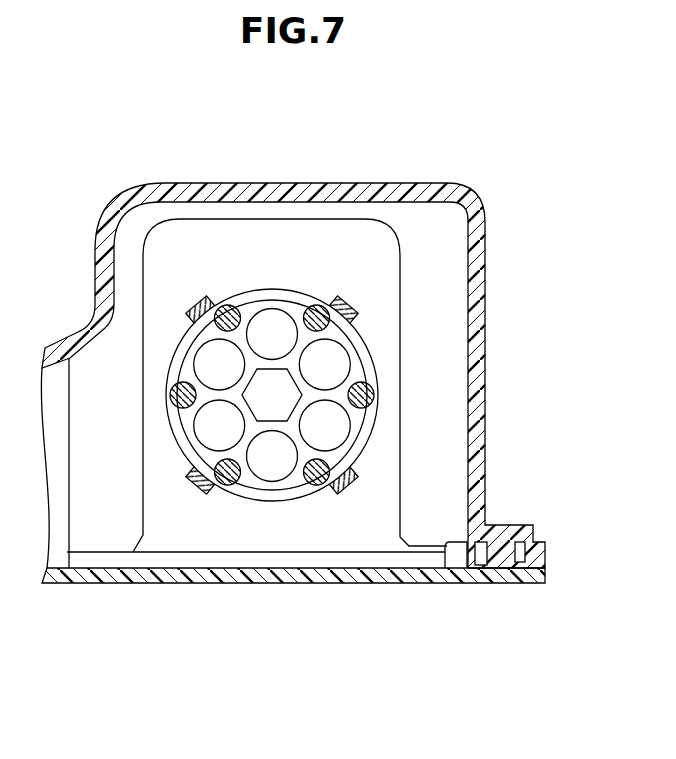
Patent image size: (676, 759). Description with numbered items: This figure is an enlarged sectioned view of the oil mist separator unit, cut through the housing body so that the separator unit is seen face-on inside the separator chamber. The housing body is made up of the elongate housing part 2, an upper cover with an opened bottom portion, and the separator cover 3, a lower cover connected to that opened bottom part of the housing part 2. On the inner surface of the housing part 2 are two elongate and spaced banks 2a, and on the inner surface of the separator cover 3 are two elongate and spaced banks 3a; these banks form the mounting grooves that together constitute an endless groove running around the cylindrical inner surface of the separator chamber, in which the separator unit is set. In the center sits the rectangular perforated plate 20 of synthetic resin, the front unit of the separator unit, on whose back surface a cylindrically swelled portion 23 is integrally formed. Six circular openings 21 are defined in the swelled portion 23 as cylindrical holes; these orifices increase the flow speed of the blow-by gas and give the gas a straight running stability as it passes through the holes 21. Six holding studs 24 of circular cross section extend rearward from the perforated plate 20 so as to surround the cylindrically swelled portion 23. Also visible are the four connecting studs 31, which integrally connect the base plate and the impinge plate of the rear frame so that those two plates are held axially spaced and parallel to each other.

The housing part 2 is at (477, 206).
The banks 2a is at (422, 232).
The perforated plate 20 is at (358, 258).
The circular openings 21 is at (273, 318).
The cylindrically swelled portion 23 is at (292, 307).
The holding studs 24 is at (230, 305).
The connecting studs 31 is at (199, 302).
The separator cover 3 is at (412, 580).
The banks 3a is at (313, 560).